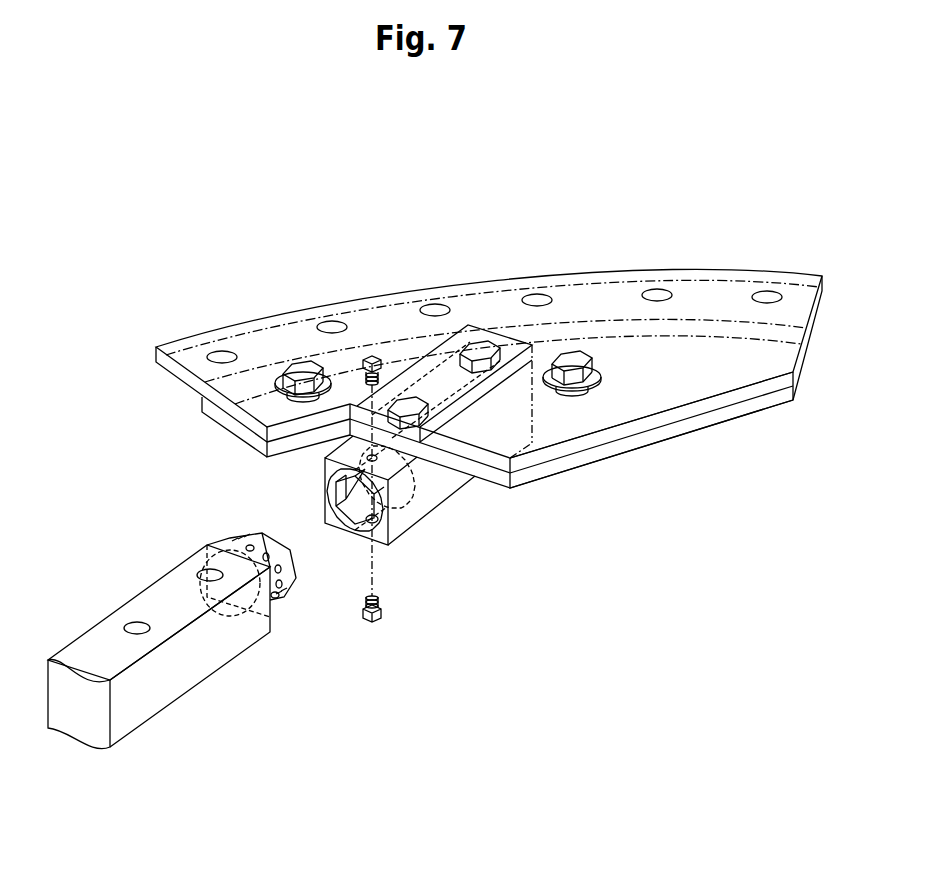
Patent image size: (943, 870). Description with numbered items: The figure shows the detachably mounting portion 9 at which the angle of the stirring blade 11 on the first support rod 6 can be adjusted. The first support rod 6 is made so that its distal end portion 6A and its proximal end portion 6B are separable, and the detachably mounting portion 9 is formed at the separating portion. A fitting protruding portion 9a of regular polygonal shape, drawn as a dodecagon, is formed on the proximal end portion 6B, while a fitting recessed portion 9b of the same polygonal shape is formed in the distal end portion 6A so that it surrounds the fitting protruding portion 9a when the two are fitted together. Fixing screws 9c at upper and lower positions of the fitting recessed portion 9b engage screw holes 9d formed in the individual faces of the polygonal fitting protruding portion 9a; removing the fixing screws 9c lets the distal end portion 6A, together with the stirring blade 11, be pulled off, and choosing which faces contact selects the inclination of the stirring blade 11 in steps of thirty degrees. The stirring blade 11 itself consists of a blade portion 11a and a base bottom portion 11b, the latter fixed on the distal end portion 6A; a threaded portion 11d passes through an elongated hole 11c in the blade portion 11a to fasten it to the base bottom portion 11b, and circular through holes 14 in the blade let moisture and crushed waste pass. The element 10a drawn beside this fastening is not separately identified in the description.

The first support rod 6 is at (114, 569).
The distal end portion 6A is at (430, 490).
The proximal end portion 6B is at (217, 648).
The detachably mounting portion 9 is at (296, 506).
The fitting protruding portion 9a is at (294, 582).
The fitting recessed portion 9b is at (350, 522).
The fixing screws 9c is at (372, 354).
The screw holes 9d is at (275, 545).
The washer 10a is at (275, 387).
The stirring blade 11 is at (683, 261).
The blade portion 11a is at (752, 390).
The base bottom portion 11b is at (703, 418).
The elongated hole 11c is at (275, 399).
The threaded portion 11d is at (300, 370).
The through holes 14 is at (327, 323).